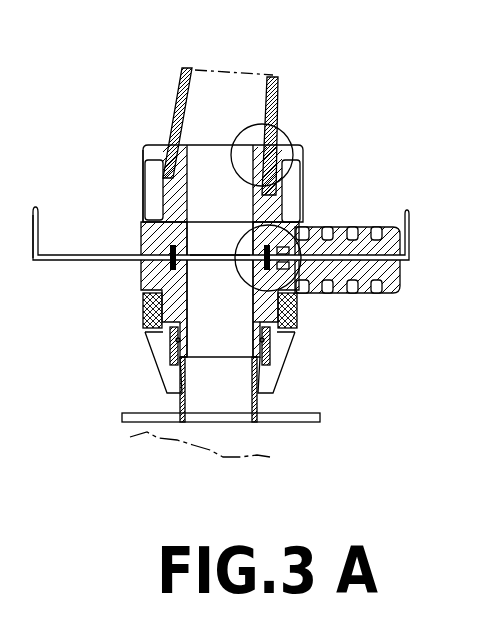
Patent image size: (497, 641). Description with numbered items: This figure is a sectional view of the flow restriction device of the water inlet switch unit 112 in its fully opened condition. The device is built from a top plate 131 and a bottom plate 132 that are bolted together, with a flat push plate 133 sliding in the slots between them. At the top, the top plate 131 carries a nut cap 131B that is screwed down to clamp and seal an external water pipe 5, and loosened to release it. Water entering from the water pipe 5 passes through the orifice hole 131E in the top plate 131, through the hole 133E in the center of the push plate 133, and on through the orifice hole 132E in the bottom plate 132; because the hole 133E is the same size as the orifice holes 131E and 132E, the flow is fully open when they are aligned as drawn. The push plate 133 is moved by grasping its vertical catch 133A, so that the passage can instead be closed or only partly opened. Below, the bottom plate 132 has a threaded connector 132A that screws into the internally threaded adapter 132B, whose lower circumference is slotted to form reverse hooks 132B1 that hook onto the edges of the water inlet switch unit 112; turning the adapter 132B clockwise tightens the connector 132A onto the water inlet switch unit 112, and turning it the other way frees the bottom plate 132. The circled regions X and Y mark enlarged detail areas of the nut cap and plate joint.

The water pipe 5 is at (252, 80).
The top plate 131 is at (343, 208).
The nut cap 131B is at (138, 155).
The orifice hole 131E is at (207, 165).
The bottom plate 132 is at (130, 275).
The connector 132A is at (227, 360).
The adapter 132B is at (311, 336).
The reverse hook 132B1 is at (165, 375).
The orifice hole 132E is at (237, 342).
The push plate 133 is at (92, 255).
The vertical catch 133A is at (43, 210).
The hole 133E is at (212, 262).
The water inlet switch unit 112 is at (203, 398).
The detail circle X is at (245, 235).
The detail circle Y is at (284, 133).